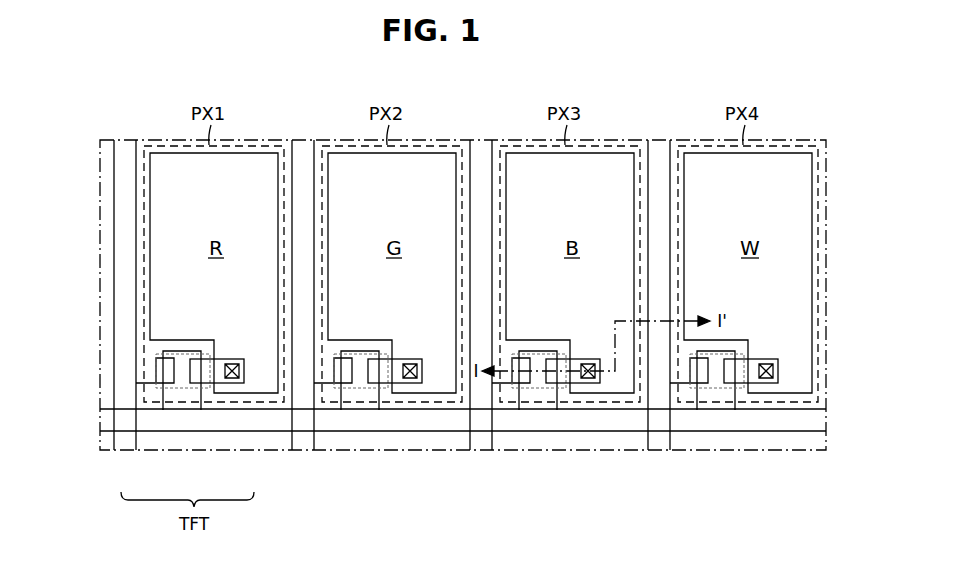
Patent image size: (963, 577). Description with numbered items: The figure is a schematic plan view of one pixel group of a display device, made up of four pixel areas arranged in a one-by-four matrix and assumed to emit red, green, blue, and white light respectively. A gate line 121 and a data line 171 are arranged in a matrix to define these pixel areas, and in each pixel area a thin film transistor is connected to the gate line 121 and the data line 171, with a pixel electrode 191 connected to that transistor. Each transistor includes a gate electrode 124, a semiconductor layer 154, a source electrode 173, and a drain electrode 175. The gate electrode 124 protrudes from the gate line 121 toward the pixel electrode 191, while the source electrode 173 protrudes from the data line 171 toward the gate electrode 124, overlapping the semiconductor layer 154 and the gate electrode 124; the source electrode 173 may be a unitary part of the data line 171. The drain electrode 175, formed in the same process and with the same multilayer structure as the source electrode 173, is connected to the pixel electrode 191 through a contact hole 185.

The data line 171 is at (136, 198).
The gate line 121 is at (102, 433).
The gate electrode 124 is at (151, 405).
The semiconductor layer 154 is at (182, 390).
The source electrode 173 is at (161, 398).
The drain electrode 175 is at (208, 386).
The contact hole 185 is at (232, 385).
The pixel electrode 191 is at (262, 396).